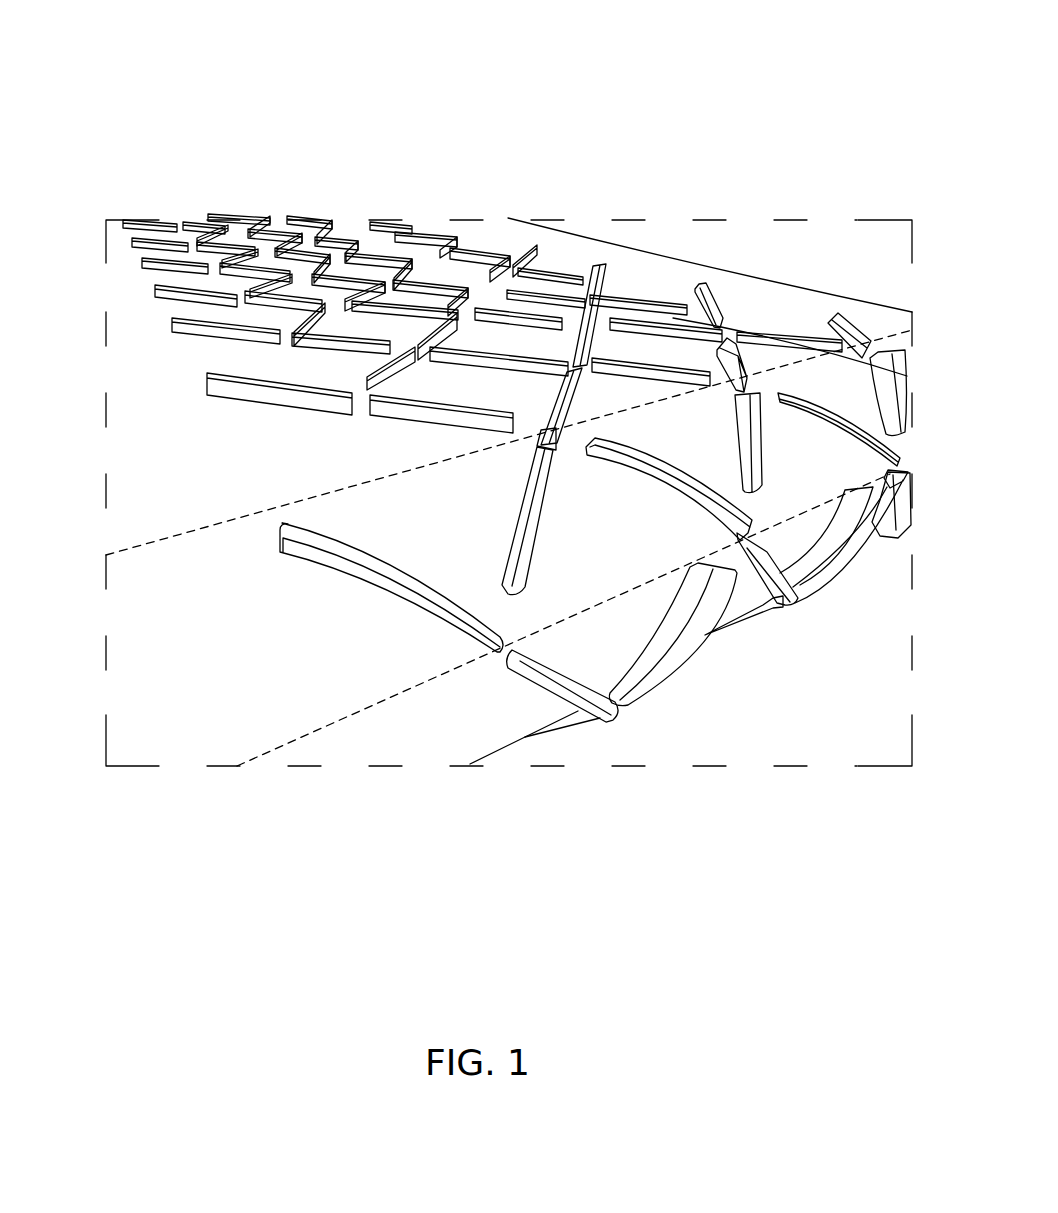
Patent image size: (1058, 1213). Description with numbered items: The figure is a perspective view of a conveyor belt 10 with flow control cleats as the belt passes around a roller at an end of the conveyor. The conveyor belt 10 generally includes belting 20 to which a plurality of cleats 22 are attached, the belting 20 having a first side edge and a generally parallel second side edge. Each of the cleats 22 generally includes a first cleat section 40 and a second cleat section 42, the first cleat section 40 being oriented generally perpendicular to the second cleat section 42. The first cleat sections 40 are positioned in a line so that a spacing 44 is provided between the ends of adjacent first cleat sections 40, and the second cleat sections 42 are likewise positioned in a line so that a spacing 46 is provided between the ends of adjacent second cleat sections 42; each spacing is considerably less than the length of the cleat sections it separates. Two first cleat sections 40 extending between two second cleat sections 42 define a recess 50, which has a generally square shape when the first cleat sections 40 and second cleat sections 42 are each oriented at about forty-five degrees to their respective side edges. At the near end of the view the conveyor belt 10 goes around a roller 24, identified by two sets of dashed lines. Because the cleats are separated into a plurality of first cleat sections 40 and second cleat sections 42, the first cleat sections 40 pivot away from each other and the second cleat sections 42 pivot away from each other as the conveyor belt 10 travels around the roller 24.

The conveyor belt 10 is at (227, 125).
The belting 20 is at (148, 462).
The cleats 22 is at (419, 208).
The roller 24 is at (138, 687).
The first cleat section 40 is at (625, 328).
The second cleat section 42 is at (588, 298).
The spacing 44 is at (697, 285).
The spacing 46 is at (595, 288).
The recess 50 is at (908, 380).